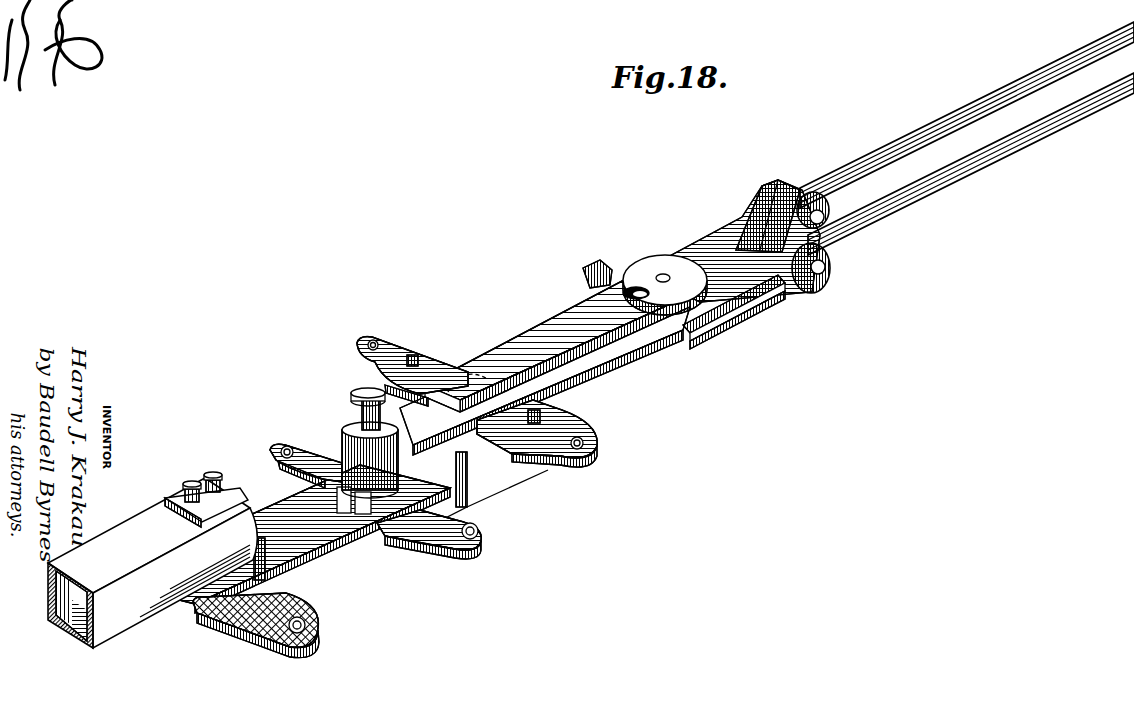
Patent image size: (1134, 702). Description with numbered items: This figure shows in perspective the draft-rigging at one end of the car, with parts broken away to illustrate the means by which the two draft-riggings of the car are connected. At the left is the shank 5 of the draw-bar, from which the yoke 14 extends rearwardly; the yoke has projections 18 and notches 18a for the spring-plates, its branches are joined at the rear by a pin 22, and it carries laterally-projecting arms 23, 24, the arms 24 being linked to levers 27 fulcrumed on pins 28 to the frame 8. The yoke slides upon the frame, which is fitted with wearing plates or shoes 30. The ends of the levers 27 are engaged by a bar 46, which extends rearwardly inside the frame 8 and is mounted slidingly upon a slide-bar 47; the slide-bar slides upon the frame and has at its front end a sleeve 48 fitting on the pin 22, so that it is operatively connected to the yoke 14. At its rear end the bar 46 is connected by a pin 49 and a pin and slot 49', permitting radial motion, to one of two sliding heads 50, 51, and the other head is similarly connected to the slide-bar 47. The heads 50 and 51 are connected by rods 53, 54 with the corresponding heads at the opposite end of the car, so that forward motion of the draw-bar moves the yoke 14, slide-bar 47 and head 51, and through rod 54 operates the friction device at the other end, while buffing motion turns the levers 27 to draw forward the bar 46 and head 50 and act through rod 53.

The shank of the draw-bar 5 is at (143, 528).
The frame 8 is at (487, 463).
The yoke 14 is at (303, 548).
The projections 18 is at (306, 543).
The notches 18a is at (327, 484).
The pin 22 is at (352, 404).
The laterally-projecting arms 23 is at (305, 610).
The laterally-projecting arms 24 is at (463, 539).
The levers 27 is at (370, 360).
The pins 28 is at (404, 353).
The wearing plates or shoes 30 is at (246, 613).
The bar 46 is at (530, 336).
The slide-bar 47 is at (610, 362).
The sleeve 48 is at (347, 444).
The pin 49 is at (665, 268).
The pin and slot 49' is at (610, 273).
The sliding head 50 is at (695, 238).
The sliding head 51 is at (730, 318).
The rod 53 is at (918, 134).
The rod 54 is at (937, 187).